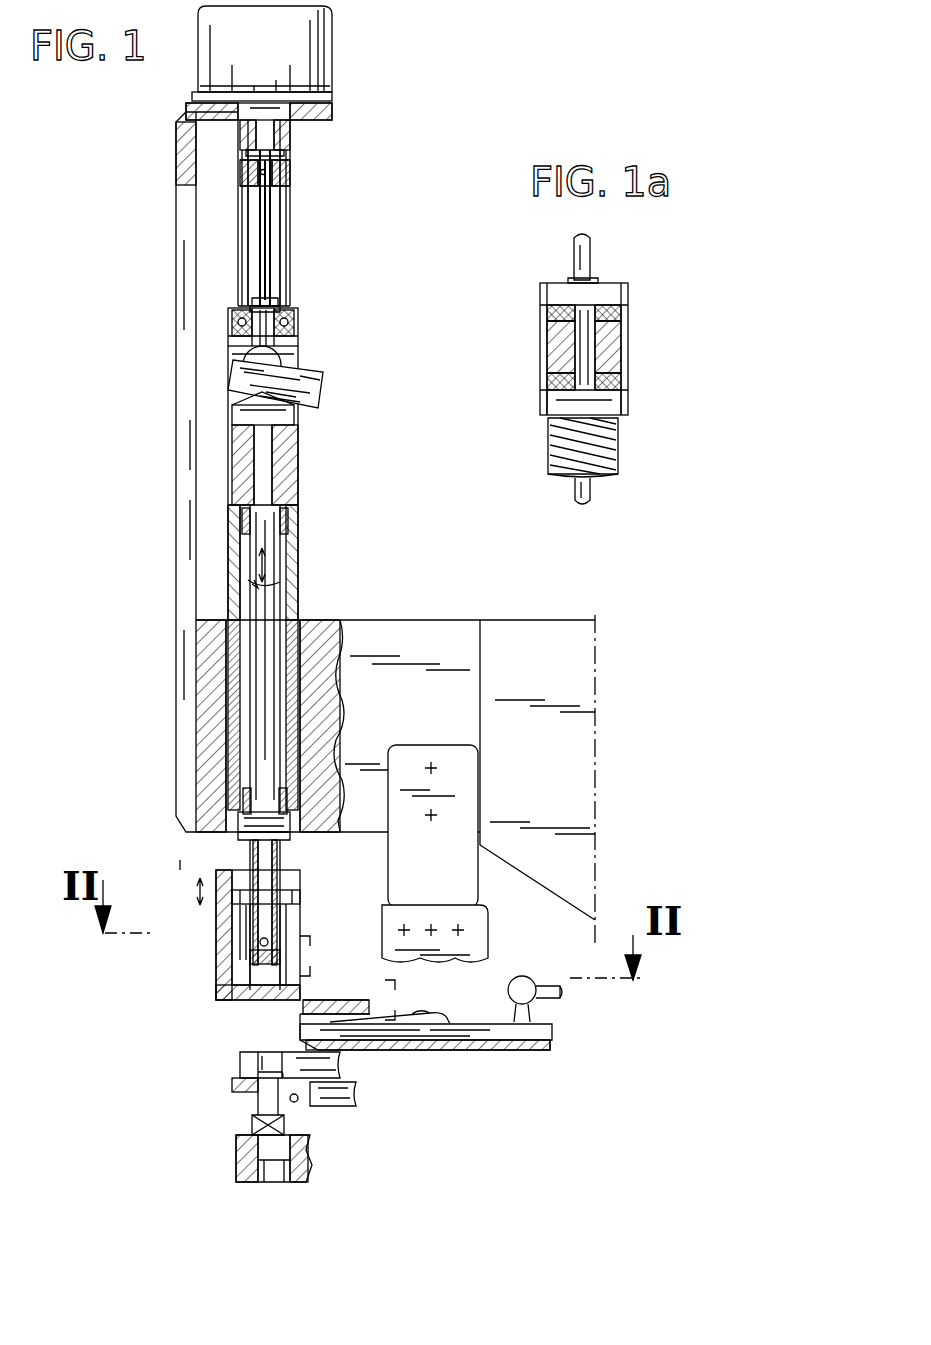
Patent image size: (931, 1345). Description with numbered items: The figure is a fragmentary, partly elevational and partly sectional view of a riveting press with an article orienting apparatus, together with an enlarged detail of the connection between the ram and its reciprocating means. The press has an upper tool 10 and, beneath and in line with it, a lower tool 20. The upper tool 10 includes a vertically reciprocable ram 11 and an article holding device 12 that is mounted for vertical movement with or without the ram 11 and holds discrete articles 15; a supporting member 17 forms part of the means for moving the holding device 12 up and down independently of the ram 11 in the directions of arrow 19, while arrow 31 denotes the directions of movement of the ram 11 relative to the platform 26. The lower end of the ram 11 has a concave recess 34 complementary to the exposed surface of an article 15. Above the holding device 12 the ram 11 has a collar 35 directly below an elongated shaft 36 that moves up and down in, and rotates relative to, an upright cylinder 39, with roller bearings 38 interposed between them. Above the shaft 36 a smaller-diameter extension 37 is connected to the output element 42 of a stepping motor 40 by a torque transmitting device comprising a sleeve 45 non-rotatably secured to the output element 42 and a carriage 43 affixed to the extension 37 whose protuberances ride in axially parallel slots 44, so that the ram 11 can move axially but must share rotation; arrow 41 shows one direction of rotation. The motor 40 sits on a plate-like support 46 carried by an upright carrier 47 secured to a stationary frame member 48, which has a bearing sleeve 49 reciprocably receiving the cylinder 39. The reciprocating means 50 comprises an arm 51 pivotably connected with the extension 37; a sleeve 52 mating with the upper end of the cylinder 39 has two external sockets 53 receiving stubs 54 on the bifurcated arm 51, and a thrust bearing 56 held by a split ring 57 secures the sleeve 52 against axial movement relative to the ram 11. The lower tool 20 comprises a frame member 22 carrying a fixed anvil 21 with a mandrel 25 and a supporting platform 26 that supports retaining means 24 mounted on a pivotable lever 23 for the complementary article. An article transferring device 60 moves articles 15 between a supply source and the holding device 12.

In FIG. 1, the upper tool 10 is at (320, 892).
In FIG. 1, the ram 11 is at (292, 862).
In FIG. 1a, the ram 11 is at (600, 494).
In FIG. 1, the article holding device 12 is at (290, 926).
In FIG. 1, the discrete article 15 is at (326, 1012).
In FIG. 1, the supporting member 17 is at (220, 970).
In FIG. 1, the double-headed arrow 19 is at (198, 894).
In FIG. 1, the lower tool 20 is at (192, 1090).
In FIG. 1, the anvil 21 is at (266, 1102).
In FIG. 1, the frame member 22 is at (300, 1148).
In FIG. 1, the pivotable lever 23 is at (336, 1102).
In FIG. 1, the retaining means 24 is at (248, 1070).
In FIG. 1, the mandrel 25 is at (262, 1054).
In FIG. 1, the supporting platform 26 is at (236, 1088).
In FIG. 1, the double-headed arrow 31 is at (276, 556).
In FIG. 1, the recess 34 is at (280, 954).
In FIG. 1, the collar 35 is at (268, 822).
In FIG. 1, the shaft 36 is at (262, 606).
In FIG. 1, the extension 37 is at (264, 240).
In FIG. 1a, the extension 37 is at (572, 490).
In FIG. 1, the roller bearings 38 is at (284, 522).
In FIG. 1, the cylinder 39 is at (292, 476).
In FIG. 1, the stepping motor 40 is at (336, 46).
In FIG. 1, the arrow 41 is at (284, 580).
In FIG. 1, the output element 42 is at (282, 140).
In FIG. 1, the carriage 43 is at (284, 180).
In FIG. 1, the axially parallel slots 44 is at (284, 216).
In FIG. 1, the sleeve 45 is at (290, 262).
In FIG. 1, the plate-like support 46 is at (336, 110).
In FIG. 1, the upright carrier 47 is at (180, 606).
In FIG. 1, the stationary frame member 48 is at (404, 640).
In FIG. 1, the bearing sleeve 49 is at (226, 628).
In FIG. 1, the reciprocating means 50 is at (323, 332).
In FIG. 1a, the reciprocating means 50 is at (646, 298).
In FIG. 1, the arm 51 is at (300, 372).
In FIG. 1, the sleeve 52 is at (284, 420).
In FIG. 1a, the sleeve 52 is at (600, 408).
In FIG. 1a, the external sockets 53 is at (610, 320).
In FIG. 1a, the stubs 54 is at (552, 355).
In FIG. 1, the thrust bearing 56 is at (292, 306).
In FIG. 1, the split ring 57 is at (252, 300).
In FIG. 1a, the split ring 57 is at (594, 280).
In FIG. 1, the article transferring device 60 is at (478, 1050).